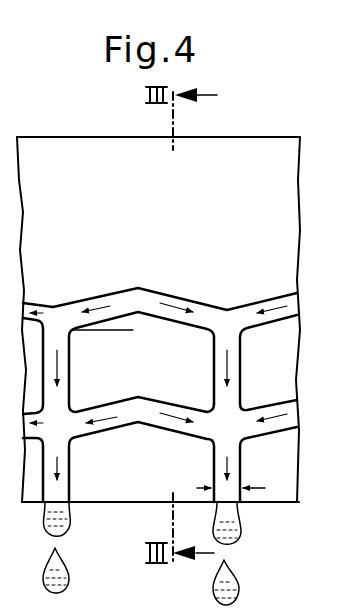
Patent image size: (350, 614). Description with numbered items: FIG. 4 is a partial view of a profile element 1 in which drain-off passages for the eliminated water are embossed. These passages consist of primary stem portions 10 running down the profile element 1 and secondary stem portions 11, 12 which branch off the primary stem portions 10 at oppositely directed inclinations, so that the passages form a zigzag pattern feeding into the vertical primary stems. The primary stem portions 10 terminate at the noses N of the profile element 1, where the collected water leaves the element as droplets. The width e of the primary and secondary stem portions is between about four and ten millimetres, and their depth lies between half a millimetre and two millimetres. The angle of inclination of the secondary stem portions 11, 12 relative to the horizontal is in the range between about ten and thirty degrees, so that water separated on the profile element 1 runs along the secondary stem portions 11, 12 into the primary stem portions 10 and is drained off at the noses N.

The profile element 1 is at (93, 132).
The primary stem portion 10 is at (69, 473).
The secondary stem portion 11 is at (27, 302).
The secondary stem portion 12 is at (124, 310).
The nose N is at (270, 503).
The width of the stem portions e is at (200, 487).